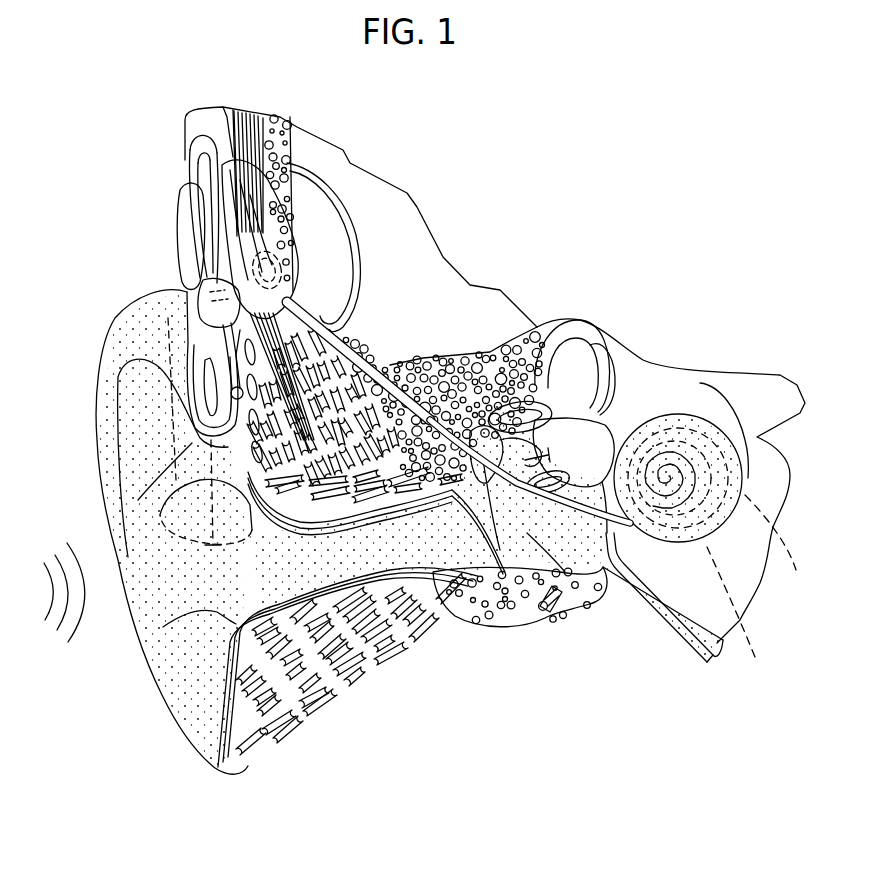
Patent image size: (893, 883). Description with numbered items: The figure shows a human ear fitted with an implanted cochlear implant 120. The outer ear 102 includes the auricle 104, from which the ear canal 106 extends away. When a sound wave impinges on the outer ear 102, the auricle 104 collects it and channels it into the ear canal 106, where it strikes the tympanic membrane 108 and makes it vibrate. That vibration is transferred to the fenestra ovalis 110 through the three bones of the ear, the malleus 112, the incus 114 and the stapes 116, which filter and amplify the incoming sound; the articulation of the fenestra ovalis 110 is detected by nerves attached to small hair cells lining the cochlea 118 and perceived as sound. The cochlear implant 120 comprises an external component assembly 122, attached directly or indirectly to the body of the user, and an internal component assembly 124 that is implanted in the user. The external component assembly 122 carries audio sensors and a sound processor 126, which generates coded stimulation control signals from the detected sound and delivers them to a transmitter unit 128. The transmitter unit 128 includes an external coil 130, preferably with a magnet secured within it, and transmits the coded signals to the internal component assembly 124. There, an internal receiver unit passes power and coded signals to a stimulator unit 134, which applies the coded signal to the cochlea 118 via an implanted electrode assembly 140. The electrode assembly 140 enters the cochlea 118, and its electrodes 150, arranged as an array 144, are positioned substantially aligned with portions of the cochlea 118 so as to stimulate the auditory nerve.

The outer ear 102 is at (218, 806).
The auricle 104 is at (172, 708).
The ear canal 106 is at (353, 550).
The tympanic membrane 108 is at (487, 540).
The fenestra ovalis 110 is at (698, 383).
The malleus 112 is at (490, 445).
The incus 114 is at (520, 457).
The stapes 116 is at (560, 478).
The cochlea 118 is at (657, 540).
The cochlear implant 120 is at (118, 194).
The external component assembly 122 is at (182, 113).
The internal component assembly 124 is at (524, 277).
The sound processor 126 is at (190, 296).
The transmitter unit 128 is at (188, 228).
The external coil 130 is at (195, 153).
The stimulator unit 134 is at (290, 268).
The electrode assembly 140 is at (400, 365).
The array of electrodes 144 is at (738, 620).
The electrodes 150 is at (779, 549).